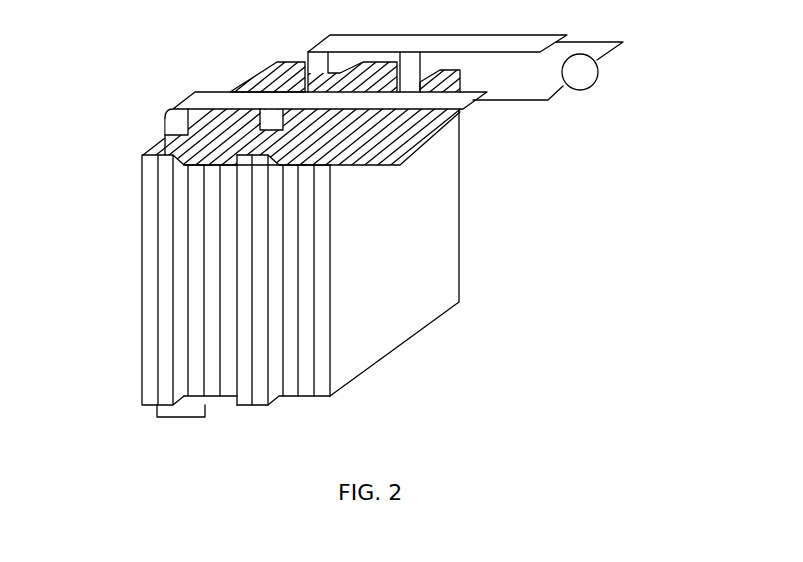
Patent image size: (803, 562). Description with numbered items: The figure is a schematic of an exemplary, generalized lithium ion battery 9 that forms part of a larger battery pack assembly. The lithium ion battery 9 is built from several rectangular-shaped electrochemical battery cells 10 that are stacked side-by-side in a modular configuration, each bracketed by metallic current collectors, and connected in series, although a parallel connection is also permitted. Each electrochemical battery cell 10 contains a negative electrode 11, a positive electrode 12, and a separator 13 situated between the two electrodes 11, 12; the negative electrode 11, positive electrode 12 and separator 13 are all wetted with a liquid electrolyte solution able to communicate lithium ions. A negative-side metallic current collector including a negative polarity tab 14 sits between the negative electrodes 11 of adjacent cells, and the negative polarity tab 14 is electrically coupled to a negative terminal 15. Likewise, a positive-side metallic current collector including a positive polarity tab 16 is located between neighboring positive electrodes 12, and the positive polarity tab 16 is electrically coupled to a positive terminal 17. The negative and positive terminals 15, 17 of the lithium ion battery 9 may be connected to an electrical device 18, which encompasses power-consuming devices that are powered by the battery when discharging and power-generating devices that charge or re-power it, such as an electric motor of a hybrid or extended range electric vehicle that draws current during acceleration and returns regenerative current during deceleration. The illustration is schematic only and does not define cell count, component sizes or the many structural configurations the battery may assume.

The lithium ion battery 9 is at (153, 56).
The electrochemical battery cell 10 is at (179, 419).
The negative electrode 11 is at (165, 343).
The positive electrode 12 is at (195, 297).
The separator 13 is at (178, 315).
The negative polarity tab 14 is at (163, 135).
The negative terminal 15 is at (444, 113).
The positive polarity tab 16 is at (293, 73).
The positive terminal 17 is at (490, 53).
The electrical device 18 is at (586, 79).